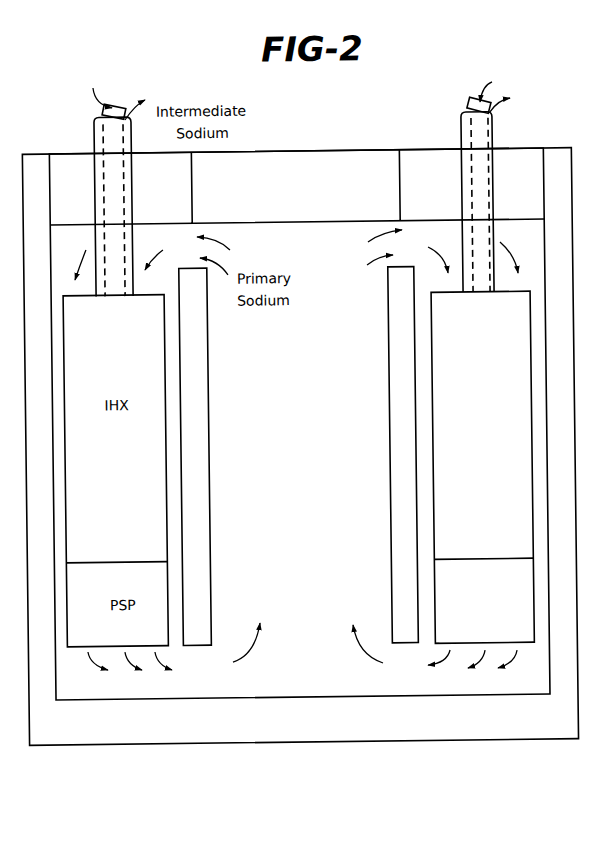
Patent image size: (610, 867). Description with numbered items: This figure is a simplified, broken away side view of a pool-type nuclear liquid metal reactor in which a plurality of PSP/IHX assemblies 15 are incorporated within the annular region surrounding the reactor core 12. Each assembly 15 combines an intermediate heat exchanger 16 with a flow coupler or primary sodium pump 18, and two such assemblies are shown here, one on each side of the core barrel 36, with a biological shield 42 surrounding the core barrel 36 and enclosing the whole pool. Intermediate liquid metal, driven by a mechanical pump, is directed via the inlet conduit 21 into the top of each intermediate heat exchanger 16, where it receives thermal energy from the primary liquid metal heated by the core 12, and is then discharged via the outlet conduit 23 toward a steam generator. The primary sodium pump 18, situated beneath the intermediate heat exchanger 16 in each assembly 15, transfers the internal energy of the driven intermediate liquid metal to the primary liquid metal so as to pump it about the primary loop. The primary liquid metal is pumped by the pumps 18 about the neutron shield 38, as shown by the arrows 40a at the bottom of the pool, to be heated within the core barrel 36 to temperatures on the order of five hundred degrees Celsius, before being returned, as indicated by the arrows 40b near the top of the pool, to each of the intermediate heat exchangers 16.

The reactor core 12 is at (308, 253).
The PSP/IHX assembly 15 is at (536, 370).
The intermediate heat exchanger 16 is at (516, 293).
The primary sodium pump 18 is at (438, 634).
The inlet conduit 21 is at (470, 105).
The outlet conduit 23 is at (497, 139).
The core barrel 36 is at (311, 407).
The neutron shield 38 is at (196, 574).
The arrows 40a is at (524, 663).
The arrows 40b is at (431, 248).
The biological shield 42 is at (159, 729).